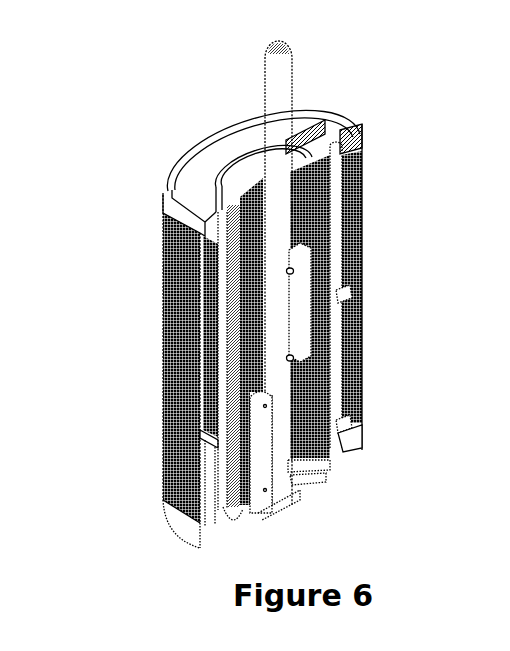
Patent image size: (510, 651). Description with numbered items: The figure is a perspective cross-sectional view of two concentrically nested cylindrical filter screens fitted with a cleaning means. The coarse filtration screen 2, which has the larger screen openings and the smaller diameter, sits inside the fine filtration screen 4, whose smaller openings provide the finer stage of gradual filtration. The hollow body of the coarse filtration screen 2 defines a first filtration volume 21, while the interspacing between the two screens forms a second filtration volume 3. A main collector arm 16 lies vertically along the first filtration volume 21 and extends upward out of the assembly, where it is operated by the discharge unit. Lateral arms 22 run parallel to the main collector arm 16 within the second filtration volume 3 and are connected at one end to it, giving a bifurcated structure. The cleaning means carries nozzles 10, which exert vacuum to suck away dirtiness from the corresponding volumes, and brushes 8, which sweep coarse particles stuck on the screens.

The coarse filtration screen 2 is at (236, 362).
The second filtration volume 3 is at (212, 500).
The fine filtration screen 4 is at (160, 297).
The brushes 8 is at (319, 276).
The nozzles 10 is at (357, 293).
The main collector arm 16 is at (282, 84).
The first filtration volume 21 is at (300, 458).
The lateral arms 22 is at (335, 198).